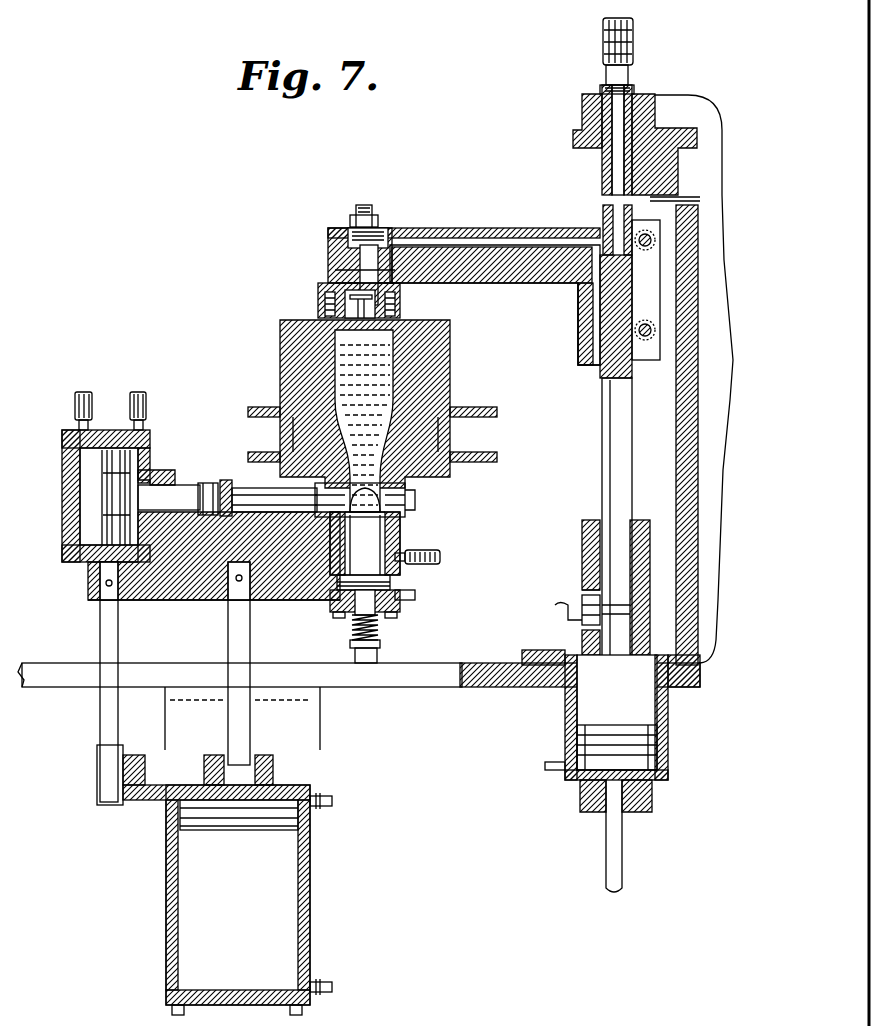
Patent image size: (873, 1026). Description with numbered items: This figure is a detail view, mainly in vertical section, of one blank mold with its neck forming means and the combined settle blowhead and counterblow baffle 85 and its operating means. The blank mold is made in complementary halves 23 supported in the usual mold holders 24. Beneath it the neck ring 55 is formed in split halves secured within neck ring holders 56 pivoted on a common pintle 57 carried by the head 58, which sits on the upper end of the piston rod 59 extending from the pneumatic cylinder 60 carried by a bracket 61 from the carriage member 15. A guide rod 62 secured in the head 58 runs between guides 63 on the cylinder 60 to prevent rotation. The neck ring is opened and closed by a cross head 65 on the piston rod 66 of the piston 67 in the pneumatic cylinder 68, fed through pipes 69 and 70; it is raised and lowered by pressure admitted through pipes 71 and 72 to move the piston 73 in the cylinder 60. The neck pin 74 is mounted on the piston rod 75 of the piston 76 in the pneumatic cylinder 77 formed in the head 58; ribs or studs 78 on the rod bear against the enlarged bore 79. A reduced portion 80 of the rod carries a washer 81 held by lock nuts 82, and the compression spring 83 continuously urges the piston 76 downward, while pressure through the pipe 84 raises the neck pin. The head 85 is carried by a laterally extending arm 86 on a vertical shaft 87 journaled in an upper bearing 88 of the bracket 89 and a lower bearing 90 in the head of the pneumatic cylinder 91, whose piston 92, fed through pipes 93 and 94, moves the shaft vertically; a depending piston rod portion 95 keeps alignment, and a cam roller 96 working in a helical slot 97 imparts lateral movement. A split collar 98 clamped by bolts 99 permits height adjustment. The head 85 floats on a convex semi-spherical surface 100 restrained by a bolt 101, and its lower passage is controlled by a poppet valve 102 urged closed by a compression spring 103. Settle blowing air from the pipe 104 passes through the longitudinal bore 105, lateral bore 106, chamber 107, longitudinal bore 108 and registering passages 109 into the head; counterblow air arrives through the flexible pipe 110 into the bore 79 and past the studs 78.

The member 15 is at (490, 687).
The mold halves 23 is at (282, 345).
The mold holders 24 is at (260, 407).
The neck ring 55 is at (415, 505).
The neck ring holders 56 is at (412, 515).
The pintle 57 is at (228, 480).
The head 58 is at (280, 600).
The piston rod 59 is at (238, 635).
The pneumatic cylinder 60 is at (310, 873).
The bracket 61 is at (300, 735).
The guide rod 62 is at (105, 625).
The guides 63 is at (135, 798).
The cross head 65 is at (205, 483).
The piston rod 66 is at (160, 485).
The piston 67 is at (115, 510).
The pneumatic cylinder 68 is at (64, 475).
The pipe 69 is at (82, 392).
The pipe 70 is at (138, 392).
The pipe 71 is at (325, 798).
The pipe 72 is at (325, 983).
The piston 73 is at (192, 830).
The neck pin 74 is at (380, 500).
The piston rod 75 is at (392, 580).
The piston 76 is at (400, 605).
The pneumatic cylinder 77 is at (392, 586).
The ribs or studs 78 is at (395, 532).
The enlarged bore 79 is at (310, 590).
The reduced portion 80 is at (375, 610).
The washer 81 is at (376, 648).
The lock nuts 82 is at (360, 660).
The compression spring 83 is at (352, 630).
The pipe 84 is at (415, 595).
The combined settle blowhead and counterblow baffle 85 is at (325, 290).
The arm 86 is at (425, 228).
The shaft 87 is at (612, 452).
The upper bearing 88 is at (585, 105).
The bracket 89 is at (720, 320).
The lower bearing 90 is at (582, 525).
The pneumatic cylinder 91 is at (668, 715).
The piston 92 is at (585, 742).
The pipe 93 is at (560, 602).
The pipe 94 is at (550, 770).
The piston rod portion 95 is at (618, 830).
The cam roller 96 is at (584, 600).
The helical slot 97 is at (590, 575).
The split collar 98 is at (600, 330).
The clamping bolts 99 is at (645, 235).
The convex semi-spherical surface 100 is at (340, 270).
The bolt 101 is at (372, 250).
The poppet valve 102 is at (325, 305).
The compression spring 103 is at (372, 298).
The pipe 104 is at (640, 52).
The longitudinal bore 105 is at (615, 160).
The lateral bore 106 is at (608, 240).
The chamber 107 is at (578, 300).
The longitudinal bore 108 is at (475, 245).
The registering passages 109 is at (352, 215).
The flexible pipe 110 is at (440, 557).